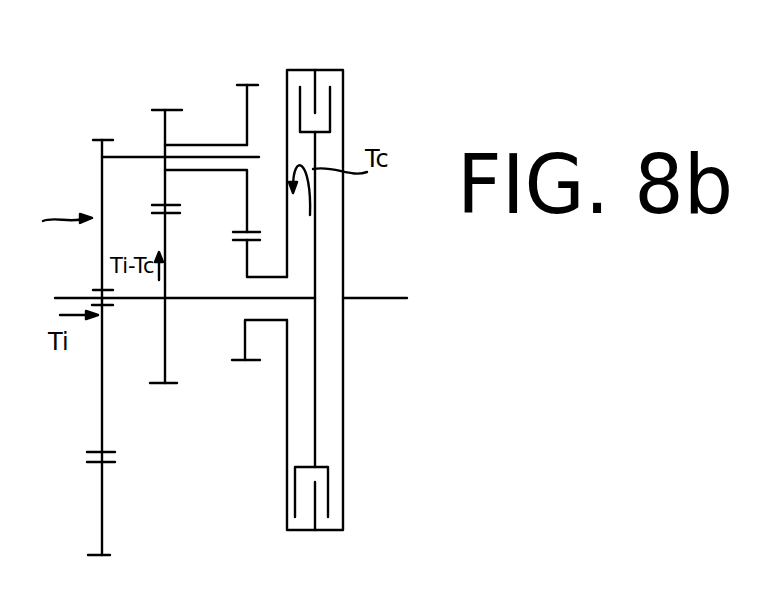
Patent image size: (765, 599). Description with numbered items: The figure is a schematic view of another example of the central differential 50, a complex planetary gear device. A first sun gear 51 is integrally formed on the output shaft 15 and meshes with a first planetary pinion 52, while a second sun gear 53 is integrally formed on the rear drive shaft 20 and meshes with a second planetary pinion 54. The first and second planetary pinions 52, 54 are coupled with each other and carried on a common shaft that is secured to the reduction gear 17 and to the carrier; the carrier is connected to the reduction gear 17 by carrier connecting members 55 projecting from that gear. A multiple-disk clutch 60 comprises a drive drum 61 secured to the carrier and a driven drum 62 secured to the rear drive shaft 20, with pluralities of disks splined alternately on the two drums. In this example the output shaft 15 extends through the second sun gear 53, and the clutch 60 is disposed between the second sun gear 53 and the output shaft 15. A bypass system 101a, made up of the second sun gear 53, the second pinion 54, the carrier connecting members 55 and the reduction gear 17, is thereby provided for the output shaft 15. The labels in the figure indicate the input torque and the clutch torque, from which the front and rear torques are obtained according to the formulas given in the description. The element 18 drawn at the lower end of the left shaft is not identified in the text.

The output shaft 15 is at (73, 292).
The reduction gear 17 is at (113, 138).
The second gear 18 is at (102, 527).
The rear drive shaft 20 is at (407, 275).
The central differential 50 is at (205, 104).
The first sun gear 51 is at (180, 214).
The first planetary pinion 52 is at (170, 110).
The second sun gear 53 is at (247, 265).
The second planetary pinion 54 is at (250, 85).
The carrier connecting members 55 is at (133, 158).
The multiple-disk clutch 60 is at (350, 66).
The drive drum 61 is at (312, 70).
The driven drum 62 is at (313, 381).
The bypass system 101a is at (55, 203).